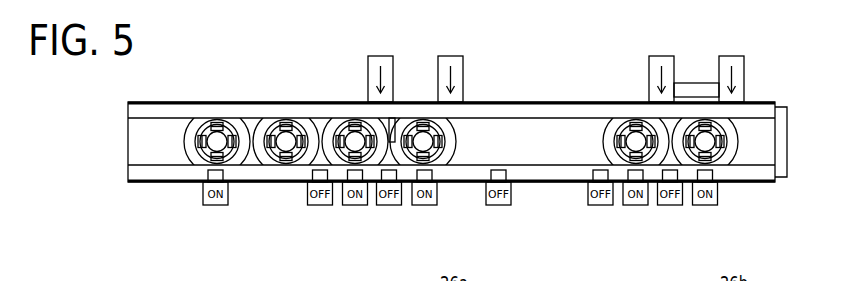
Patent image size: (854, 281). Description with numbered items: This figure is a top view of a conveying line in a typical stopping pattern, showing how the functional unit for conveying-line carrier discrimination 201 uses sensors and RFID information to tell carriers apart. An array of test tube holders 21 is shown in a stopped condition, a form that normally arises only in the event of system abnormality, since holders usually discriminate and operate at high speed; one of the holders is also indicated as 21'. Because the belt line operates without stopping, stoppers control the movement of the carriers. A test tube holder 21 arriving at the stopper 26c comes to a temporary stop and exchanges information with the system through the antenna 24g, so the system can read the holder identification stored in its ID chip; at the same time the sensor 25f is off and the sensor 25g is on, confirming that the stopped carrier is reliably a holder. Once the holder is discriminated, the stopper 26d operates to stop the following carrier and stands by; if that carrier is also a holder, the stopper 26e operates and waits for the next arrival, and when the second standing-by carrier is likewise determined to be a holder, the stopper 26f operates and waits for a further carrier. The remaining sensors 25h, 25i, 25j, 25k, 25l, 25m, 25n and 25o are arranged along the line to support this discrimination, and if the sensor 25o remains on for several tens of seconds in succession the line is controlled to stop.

The functional unit for conveying-line carrier discrimination 201 is at (565, 102).
The test tube holder 21 is at (744, 142).
The roller 21' is at (423, 119).
The antenna 24g is at (692, 83).
The stopper 26c is at (735, 58).
The stopper 26d is at (659, 58).
The stopper 26e is at (450, 58).
The stopper 26f is at (382, 58).
The sensor 25f is at (670, 206).
The sensor 25g is at (705, 206).
The sensor 25h is at (636, 206).
The sensor 25i is at (600, 206).
The sensor 25j is at (498, 206).
The sensor 25k is at (424, 206).
The sensor 25l is at (389, 206).
The sensor 25m is at (355, 206).
The sensor 25n is at (320, 206).
The sensor 25o is at (215, 206).